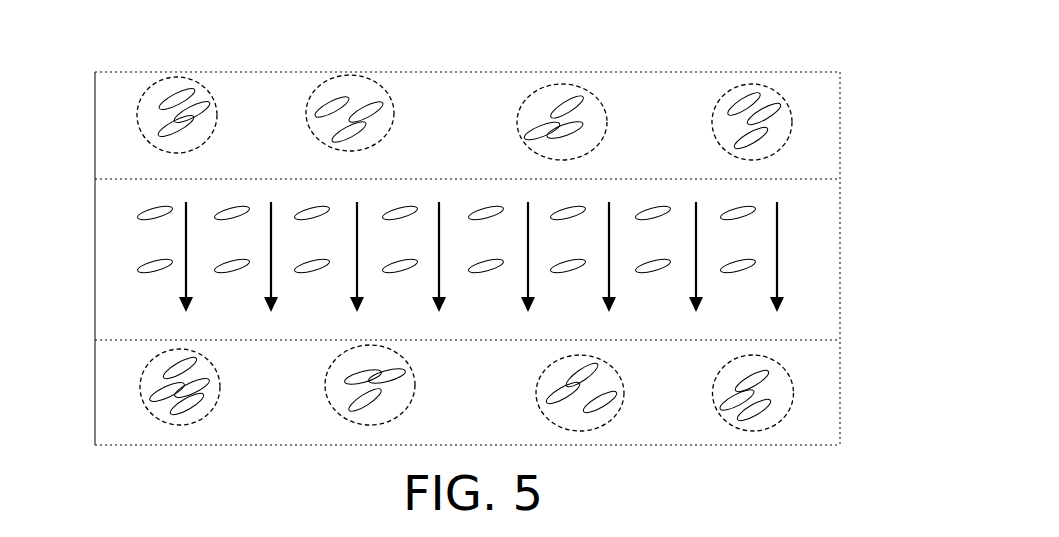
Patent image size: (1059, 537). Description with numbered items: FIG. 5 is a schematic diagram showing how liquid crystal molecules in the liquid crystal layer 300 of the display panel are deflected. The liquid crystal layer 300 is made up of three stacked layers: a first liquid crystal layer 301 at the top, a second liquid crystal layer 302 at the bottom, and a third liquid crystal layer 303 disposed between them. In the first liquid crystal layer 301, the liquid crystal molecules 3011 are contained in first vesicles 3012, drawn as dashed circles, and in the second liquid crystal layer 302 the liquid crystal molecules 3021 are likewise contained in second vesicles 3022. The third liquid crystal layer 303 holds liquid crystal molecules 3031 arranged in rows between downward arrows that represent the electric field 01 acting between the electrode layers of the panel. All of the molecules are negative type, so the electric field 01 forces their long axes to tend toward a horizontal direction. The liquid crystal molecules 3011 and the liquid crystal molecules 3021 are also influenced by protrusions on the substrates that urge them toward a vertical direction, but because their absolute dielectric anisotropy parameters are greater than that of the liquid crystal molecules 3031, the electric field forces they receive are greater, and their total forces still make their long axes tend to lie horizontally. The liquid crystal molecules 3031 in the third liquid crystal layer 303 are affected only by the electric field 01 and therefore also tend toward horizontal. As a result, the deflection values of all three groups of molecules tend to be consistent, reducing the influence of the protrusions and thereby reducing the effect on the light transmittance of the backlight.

The liquid crystal layer 300 is at (131, 57).
The first liquid crystal layer 301 is at (840, 82).
The liquid crystal molecules 3011 is at (767, 113).
The first vesicles 3012 is at (783, 143).
The third liquid crystal layer 303 is at (840, 187).
The liquid crystal molecules 3031 is at (748, 212).
The electric field 01 is at (780, 259).
The second liquid crystal layer 302 is at (840, 353).
The liquid crystal molecules 3021 is at (767, 383).
The second vesicles 3022 is at (788, 410).